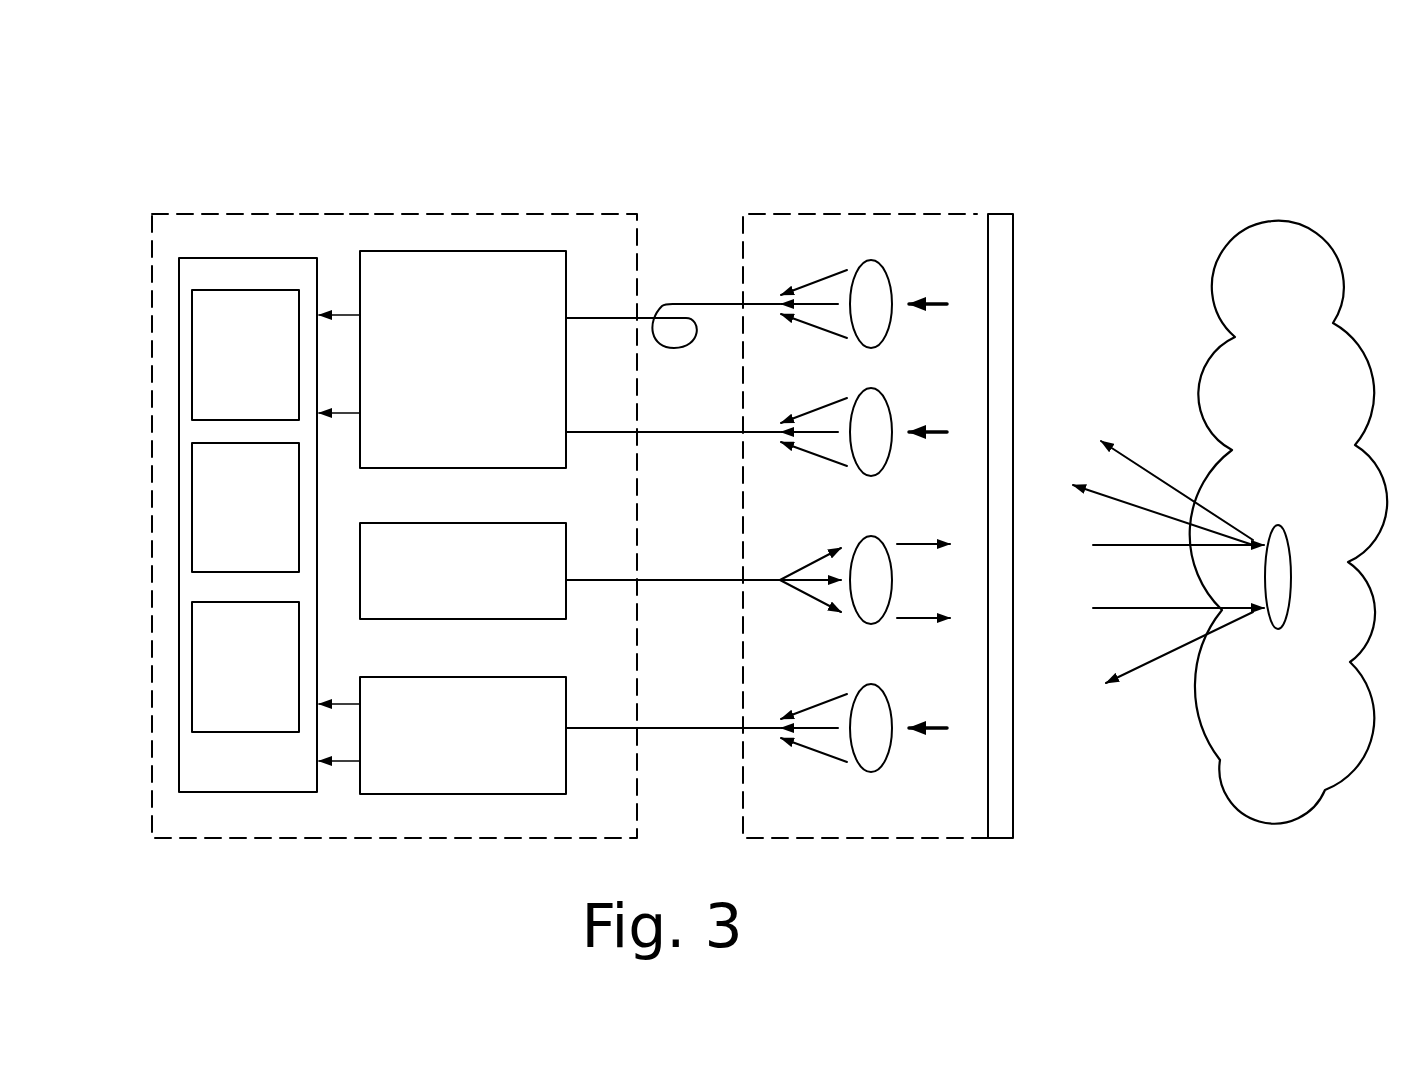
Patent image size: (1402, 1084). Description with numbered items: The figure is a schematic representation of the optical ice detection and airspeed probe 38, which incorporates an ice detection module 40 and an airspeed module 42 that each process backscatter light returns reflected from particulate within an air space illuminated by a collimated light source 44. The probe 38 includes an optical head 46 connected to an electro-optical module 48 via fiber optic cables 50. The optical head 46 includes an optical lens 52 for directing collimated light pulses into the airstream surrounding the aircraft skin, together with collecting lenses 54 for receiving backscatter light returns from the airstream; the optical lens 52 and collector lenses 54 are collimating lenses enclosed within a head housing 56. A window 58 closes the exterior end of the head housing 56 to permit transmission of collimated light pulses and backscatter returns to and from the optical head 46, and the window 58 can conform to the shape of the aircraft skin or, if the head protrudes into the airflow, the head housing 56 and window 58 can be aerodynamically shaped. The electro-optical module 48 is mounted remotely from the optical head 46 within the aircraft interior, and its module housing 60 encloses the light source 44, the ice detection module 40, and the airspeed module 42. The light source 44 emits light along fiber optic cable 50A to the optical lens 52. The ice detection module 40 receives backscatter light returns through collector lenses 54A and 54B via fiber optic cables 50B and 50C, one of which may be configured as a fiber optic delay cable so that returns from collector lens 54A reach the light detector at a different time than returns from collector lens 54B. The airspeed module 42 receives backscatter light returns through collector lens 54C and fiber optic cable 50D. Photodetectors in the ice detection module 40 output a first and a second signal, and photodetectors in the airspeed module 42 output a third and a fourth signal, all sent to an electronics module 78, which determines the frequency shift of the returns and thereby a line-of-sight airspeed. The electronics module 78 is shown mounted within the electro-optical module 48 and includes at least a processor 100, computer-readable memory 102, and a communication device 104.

The optical ice detection and airspeed probe 38 is at (1131, 163).
The ice detection module 40 is at (446, 427).
The airspeed module 42 is at (446, 780).
The light source 44 is at (446, 612).
The optical head 46 is at (891, 159).
The electro-optical module 48 is at (477, 184).
The fiber optic cables 50 is at (693, 216).
The fiber optic cable 50A is at (672, 580).
The fiber optic cable 50B is at (690, 304).
The fiber optic cable 50C is at (676, 432).
The fiber optic cable 50D is at (672, 728).
The optical lens 52 is at (880, 545).
The collecting lenses 54 is at (927, 239).
The collector lens 54A is at (887, 274).
The collector lens 54B is at (887, 402).
The collector lens 54C is at (887, 698).
The head housing 56 is at (808, 214).
The window 58 is at (1013, 268).
The module housing 60 is at (336, 214).
The electronics module 78 is at (232, 258).
The processor 100 is at (220, 369).
The computer-readable memory 102 is at (220, 522).
The communication device 104 is at (220, 681).